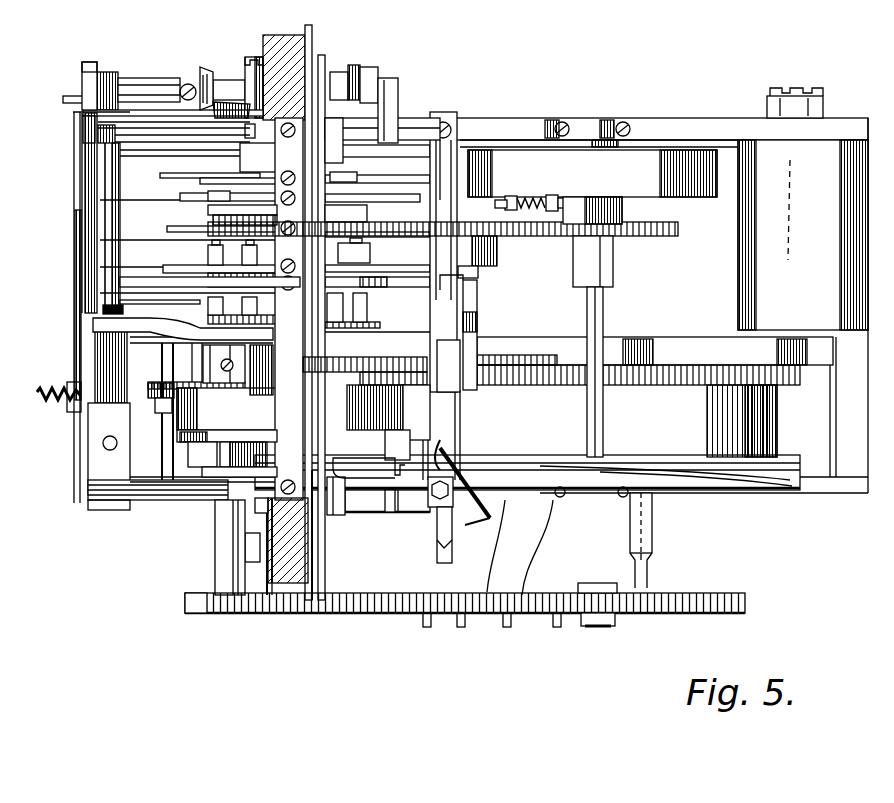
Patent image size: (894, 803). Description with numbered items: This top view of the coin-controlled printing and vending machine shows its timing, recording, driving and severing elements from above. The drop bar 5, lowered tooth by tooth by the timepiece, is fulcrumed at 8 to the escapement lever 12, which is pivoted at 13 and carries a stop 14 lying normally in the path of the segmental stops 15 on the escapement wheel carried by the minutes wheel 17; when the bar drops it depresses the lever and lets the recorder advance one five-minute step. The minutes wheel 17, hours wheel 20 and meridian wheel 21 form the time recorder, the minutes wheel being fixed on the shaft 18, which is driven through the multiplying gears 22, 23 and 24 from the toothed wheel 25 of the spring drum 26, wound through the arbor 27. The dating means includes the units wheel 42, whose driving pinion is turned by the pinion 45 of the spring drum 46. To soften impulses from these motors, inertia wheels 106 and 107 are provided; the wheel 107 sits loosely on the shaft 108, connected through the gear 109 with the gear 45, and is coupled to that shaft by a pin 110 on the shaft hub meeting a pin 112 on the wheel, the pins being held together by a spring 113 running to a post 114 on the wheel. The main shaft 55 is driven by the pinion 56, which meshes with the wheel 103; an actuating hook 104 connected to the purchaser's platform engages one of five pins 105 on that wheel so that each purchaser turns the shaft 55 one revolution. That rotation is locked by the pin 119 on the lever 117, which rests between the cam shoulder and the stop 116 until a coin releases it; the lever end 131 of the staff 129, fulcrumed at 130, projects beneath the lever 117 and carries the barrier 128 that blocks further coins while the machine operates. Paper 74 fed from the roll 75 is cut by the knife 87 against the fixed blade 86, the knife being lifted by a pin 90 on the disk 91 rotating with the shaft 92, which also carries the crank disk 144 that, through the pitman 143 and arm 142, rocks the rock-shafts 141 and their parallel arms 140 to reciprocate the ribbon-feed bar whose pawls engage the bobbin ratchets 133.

The drop bar 5 is at (474, 340).
The fulcrum 8 is at (486, 318).
The escapement lever 12 is at (149, 326).
The pivot 13 is at (118, 322).
The stop 14 is at (271, 322).
The segmental stops 15 is at (261, 312).
The minutes wheel 17 is at (212, 303).
The shaft 18 is at (270, 353).
The hours wheel 20 is at (173, 278).
The meridian wheel 21 is at (207, 257).
The multiplying gear 22 is at (266, 381).
The multiplying gear 23 is at (338, 362).
The multiplying gear 24 is at (413, 382).
The toothed wheel 25 is at (692, 373).
The spring drum 26 is at (767, 417).
The arbor 27 is at (652, 525).
The units wheel 42 is at (202, 216).
The pinion 45 is at (413, 227).
The spring drum 46 is at (498, 250).
The shaft 55 is at (227, 561).
The pinion 56 is at (205, 608).
The paper 74 is at (593, 202).
The roll 75 is at (803, 235).
The fixed blade 86 is at (84, 213).
The knife 87 is at (80, 168).
The pin 90 is at (72, 95).
The disk 91 is at (88, 62).
The shaft 92 is at (228, 86).
The pinion 103 is at (387, 600).
The actuating hook 104 is at (598, 622).
The pins 105 is at (552, 615).
The inertia wheel 106 is at (227, 409).
The inertia wheel 107 is at (532, 198).
The shaft 108 is at (603, 305).
The gear 109 is at (643, 238).
The pin 110 is at (500, 205).
The pin 112 is at (515, 199).
The spring 113 is at (548, 196).
The post 114 is at (193, 454).
The stop 116 is at (210, 428).
The lever 117 is at (334, 468).
The pin 119 is at (227, 463).
The barrier 128 is at (442, 460).
The staff 129 is at (455, 472).
The fulcrum 130 is at (475, 518).
The lever end 131 is at (337, 516).
The ratchets 133 is at (308, 46).
The parallel arms 140 is at (337, 137).
The rock-shafts 141 is at (434, 119).
The arm 142 is at (400, 118).
The pitman 143 is at (380, 73).
The crank disk 144 is at (352, 66).